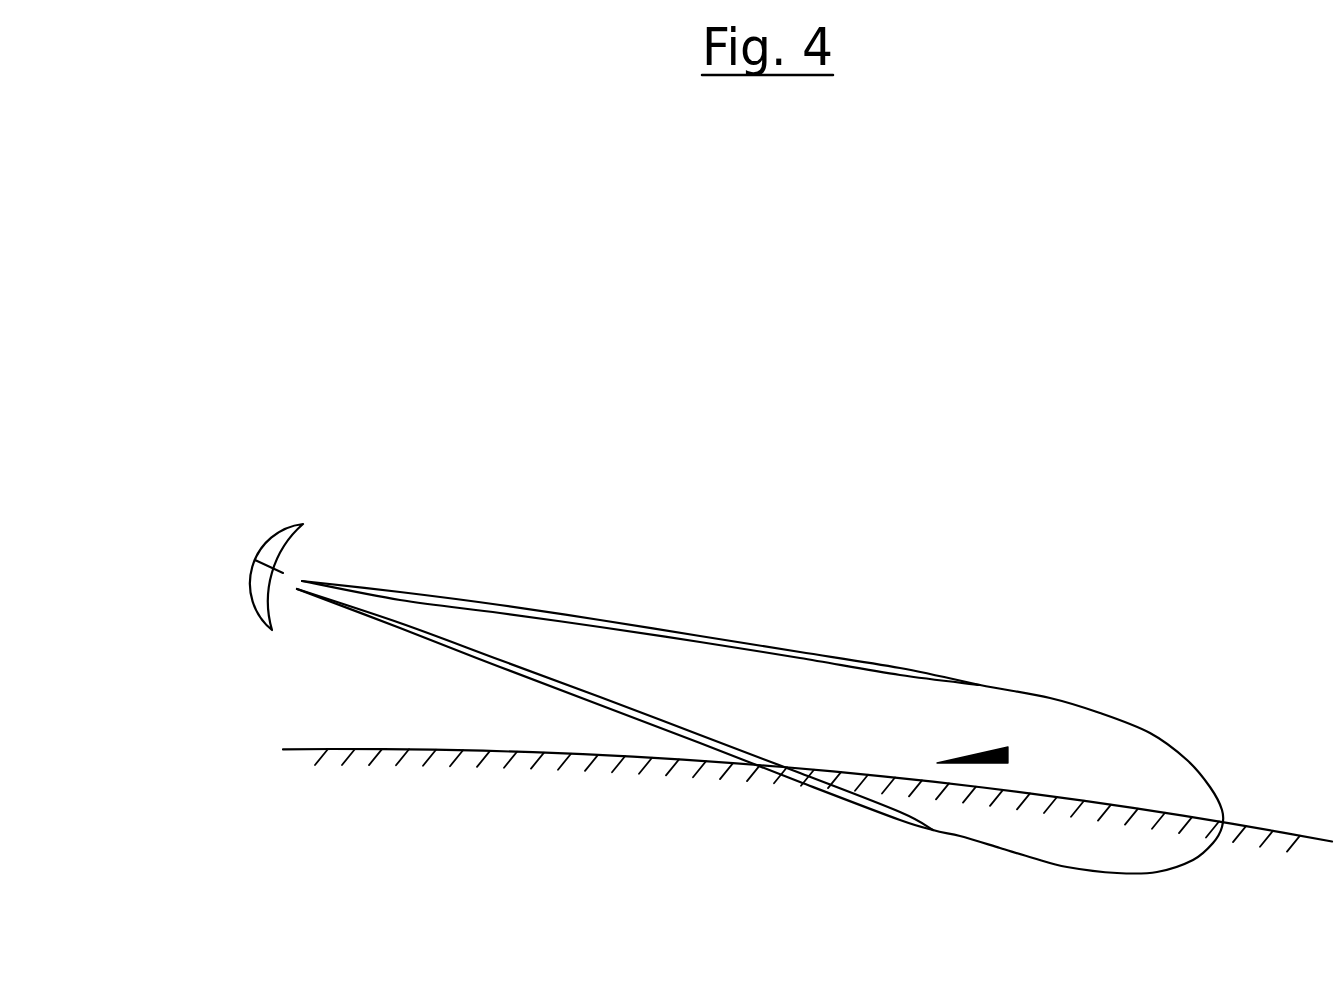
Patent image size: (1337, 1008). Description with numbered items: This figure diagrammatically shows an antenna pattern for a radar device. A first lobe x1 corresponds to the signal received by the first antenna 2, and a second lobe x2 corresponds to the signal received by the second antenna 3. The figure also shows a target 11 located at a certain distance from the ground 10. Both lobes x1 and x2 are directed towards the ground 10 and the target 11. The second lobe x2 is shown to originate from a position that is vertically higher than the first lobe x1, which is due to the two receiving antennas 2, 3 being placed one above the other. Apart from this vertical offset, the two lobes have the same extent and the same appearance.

The first antenna 2 is at (253, 590).
The second antenna 3 is at (278, 547).
The ground 10 is at (1117, 807).
The target 11 is at (974, 755).
The first lobe x1 is at (423, 655).
The second lobe x2 is at (453, 592).